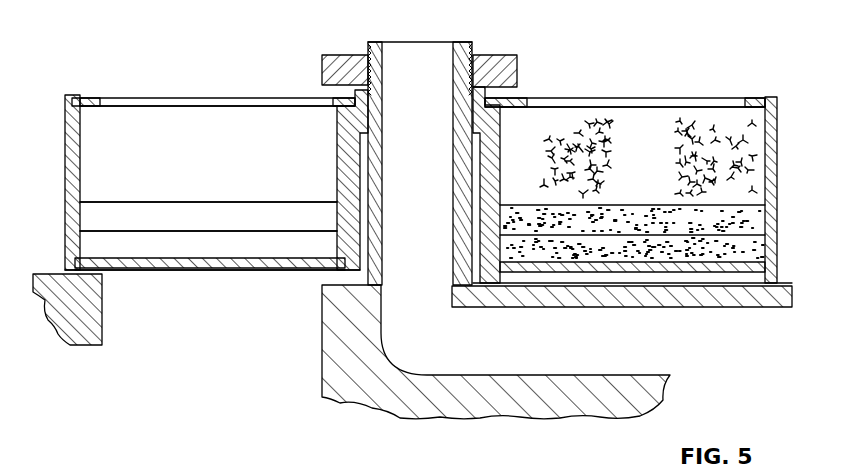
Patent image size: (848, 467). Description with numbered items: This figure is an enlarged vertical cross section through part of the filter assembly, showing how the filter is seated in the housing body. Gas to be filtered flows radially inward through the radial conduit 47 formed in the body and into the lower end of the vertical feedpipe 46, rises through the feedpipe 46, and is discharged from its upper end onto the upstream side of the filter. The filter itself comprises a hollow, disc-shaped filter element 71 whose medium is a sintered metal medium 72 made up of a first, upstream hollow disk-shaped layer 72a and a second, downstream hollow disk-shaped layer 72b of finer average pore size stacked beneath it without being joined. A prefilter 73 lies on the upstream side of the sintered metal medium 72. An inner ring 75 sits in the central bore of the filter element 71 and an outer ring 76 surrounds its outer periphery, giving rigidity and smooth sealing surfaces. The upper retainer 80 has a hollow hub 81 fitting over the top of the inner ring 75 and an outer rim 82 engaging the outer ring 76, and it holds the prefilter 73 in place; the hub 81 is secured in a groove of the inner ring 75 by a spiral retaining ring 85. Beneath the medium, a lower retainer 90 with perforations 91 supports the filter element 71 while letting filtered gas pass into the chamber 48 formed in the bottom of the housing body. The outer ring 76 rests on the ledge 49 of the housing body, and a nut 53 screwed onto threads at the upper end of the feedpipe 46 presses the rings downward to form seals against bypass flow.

The vertical feedpipe 46 is at (382, 208).
The radial conduit 47 is at (567, 353).
The chamber 48 is at (752, 262).
The ledge 49 is at (47, 268).
The nut 53 is at (497, 55).
The filter element 71 is at (242, 108).
The sintered metal medium 72 is at (55, 200).
The first layer 72a is at (122, 212).
The second layer 72b is at (142, 243).
The prefilter 73 is at (600, 117).
The inner ring 75 is at (502, 132).
The outer ring 76 is at (65, 133).
The upper retainer 80 is at (205, 97).
The hollow hub 81 is at (322, 100).
The outer rim 82 is at (97, 97).
The spiral retaining ring 85 is at (500, 100).
The lower retainer 90 is at (152, 272).
The perforations 91 is at (190, 263).